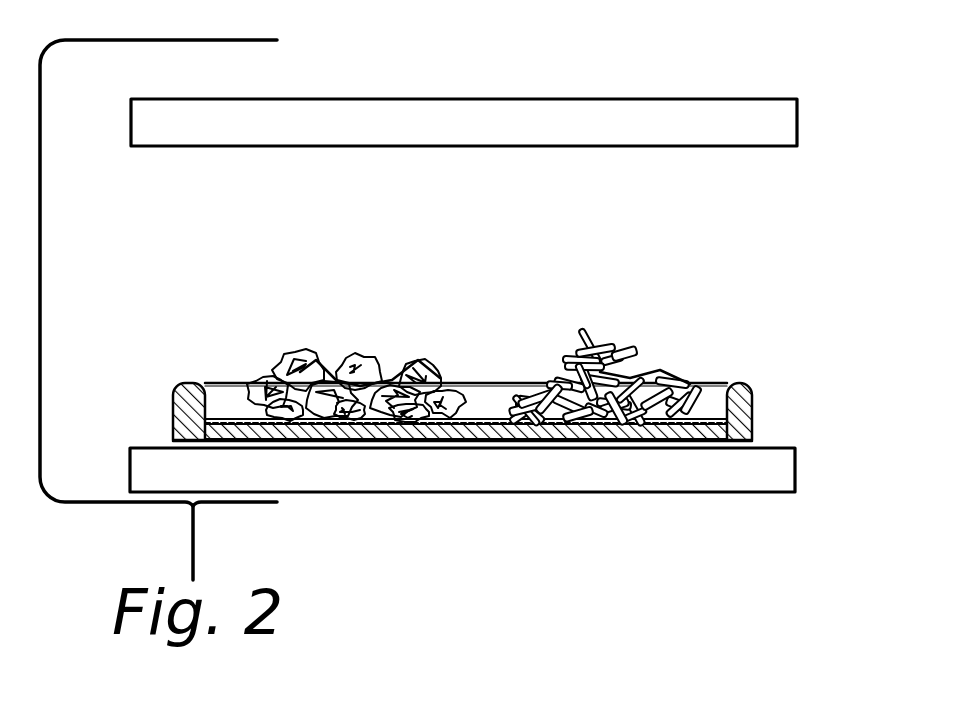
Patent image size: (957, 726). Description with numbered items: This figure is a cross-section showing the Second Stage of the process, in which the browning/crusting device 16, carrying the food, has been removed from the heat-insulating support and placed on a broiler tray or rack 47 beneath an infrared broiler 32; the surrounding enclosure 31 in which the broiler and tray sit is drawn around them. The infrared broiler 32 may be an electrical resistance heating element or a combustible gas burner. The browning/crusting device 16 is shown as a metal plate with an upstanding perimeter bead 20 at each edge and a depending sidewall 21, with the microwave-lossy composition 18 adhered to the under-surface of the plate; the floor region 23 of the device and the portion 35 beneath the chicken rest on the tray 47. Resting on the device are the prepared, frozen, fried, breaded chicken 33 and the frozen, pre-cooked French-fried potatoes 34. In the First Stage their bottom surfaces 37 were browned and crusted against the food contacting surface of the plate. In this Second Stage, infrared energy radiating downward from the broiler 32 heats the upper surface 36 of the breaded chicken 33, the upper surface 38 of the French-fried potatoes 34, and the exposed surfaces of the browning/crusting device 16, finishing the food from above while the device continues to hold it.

The broiler oven 31 is at (148, 286).
The infrared broiler 32 is at (566, 99).
The broiler tray 47 is at (781, 486).
The browning/crusting device 16 is at (463, 423).
The upstanding perimeter bead 20 is at (190, 382).
The depending sidewall 21 is at (757, 420).
The microwave-lossy composition 18 is at (715, 441).
The tray floor 23 is at (575, 441).
The bottom surfaces 37 is at (660, 441).
The floor portion under charcoal 35 is at (358, 441).
The breaded chicken 33 is at (375, 358).
The upper surface of the breaded chicken 36 is at (432, 368).
The French-fried potatoes 34 is at (590, 370).
The upper surface of the French-fried potatoes 38 is at (697, 380).